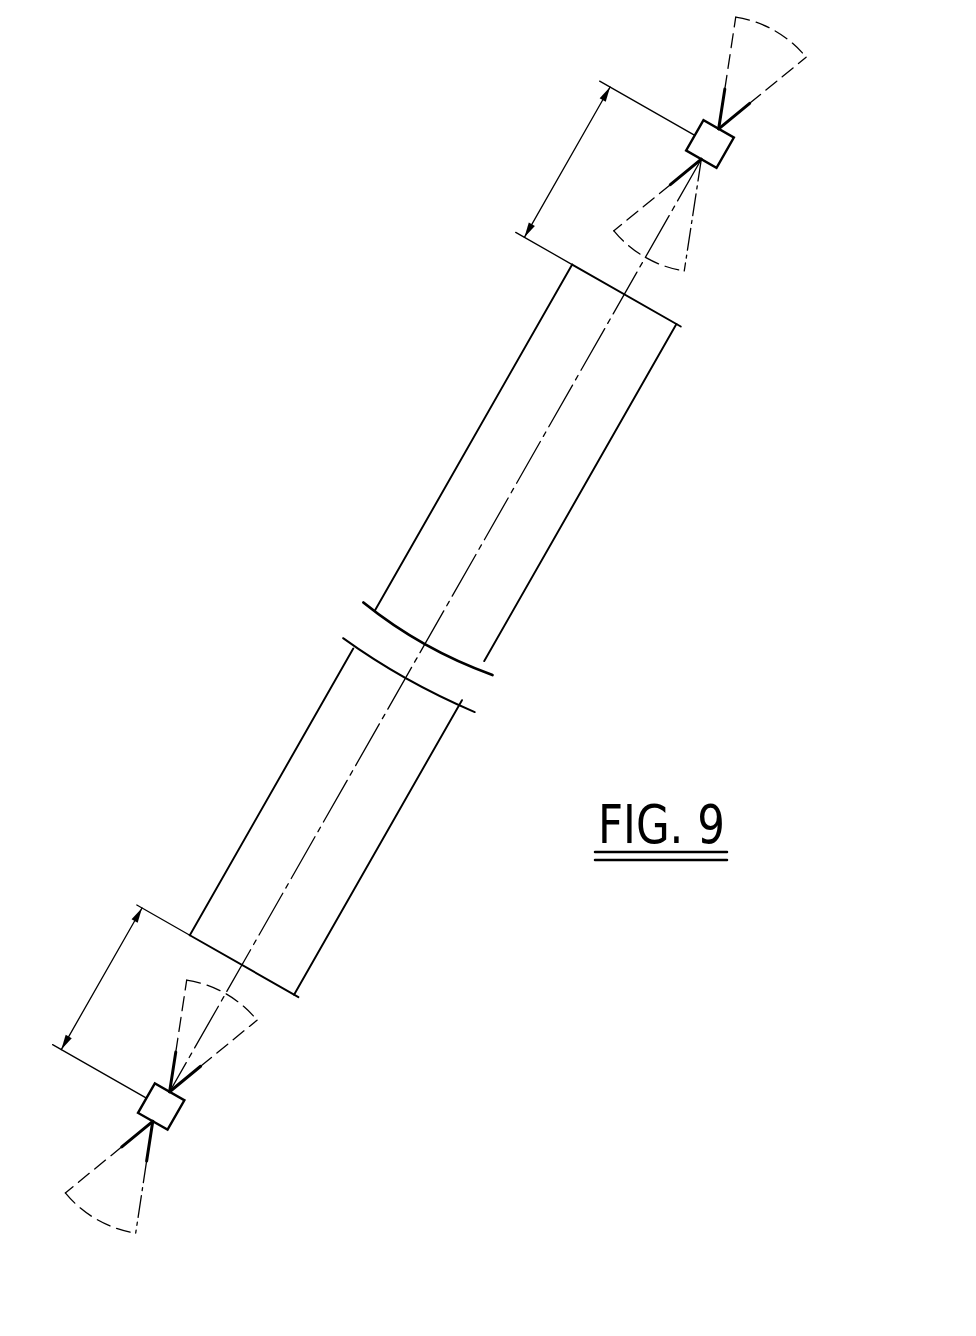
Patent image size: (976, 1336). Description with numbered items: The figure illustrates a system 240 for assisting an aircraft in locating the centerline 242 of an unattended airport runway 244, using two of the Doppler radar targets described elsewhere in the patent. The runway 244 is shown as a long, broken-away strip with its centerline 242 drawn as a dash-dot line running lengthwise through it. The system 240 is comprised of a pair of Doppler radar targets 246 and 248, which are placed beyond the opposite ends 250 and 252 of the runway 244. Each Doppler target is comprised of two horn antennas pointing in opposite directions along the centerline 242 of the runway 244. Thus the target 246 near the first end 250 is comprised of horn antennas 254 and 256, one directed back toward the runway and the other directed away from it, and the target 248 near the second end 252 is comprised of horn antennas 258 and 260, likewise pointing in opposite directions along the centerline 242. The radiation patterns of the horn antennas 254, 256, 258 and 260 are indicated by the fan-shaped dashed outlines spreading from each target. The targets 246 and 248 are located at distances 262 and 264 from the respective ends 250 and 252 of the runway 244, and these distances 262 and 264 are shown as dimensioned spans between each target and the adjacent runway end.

The system 240 is at (459, 386).
The centerline 242 is at (497, 520).
The runway 244 is at (503, 602).
The Doppler radar target 246 is at (183, 1110).
The Doppler radar target 248 is at (731, 156).
The end of runway 250 is at (277, 993).
The end of runway 252 is at (653, 312).
The horn antenna 254 is at (199, 1073).
The horn antenna 256 is at (155, 1148).
The horn antenna 258 is at (703, 182).
The horn antenna 260 is at (742, 110).
The distance 262 is at (95, 983).
The distance 264 is at (570, 160).